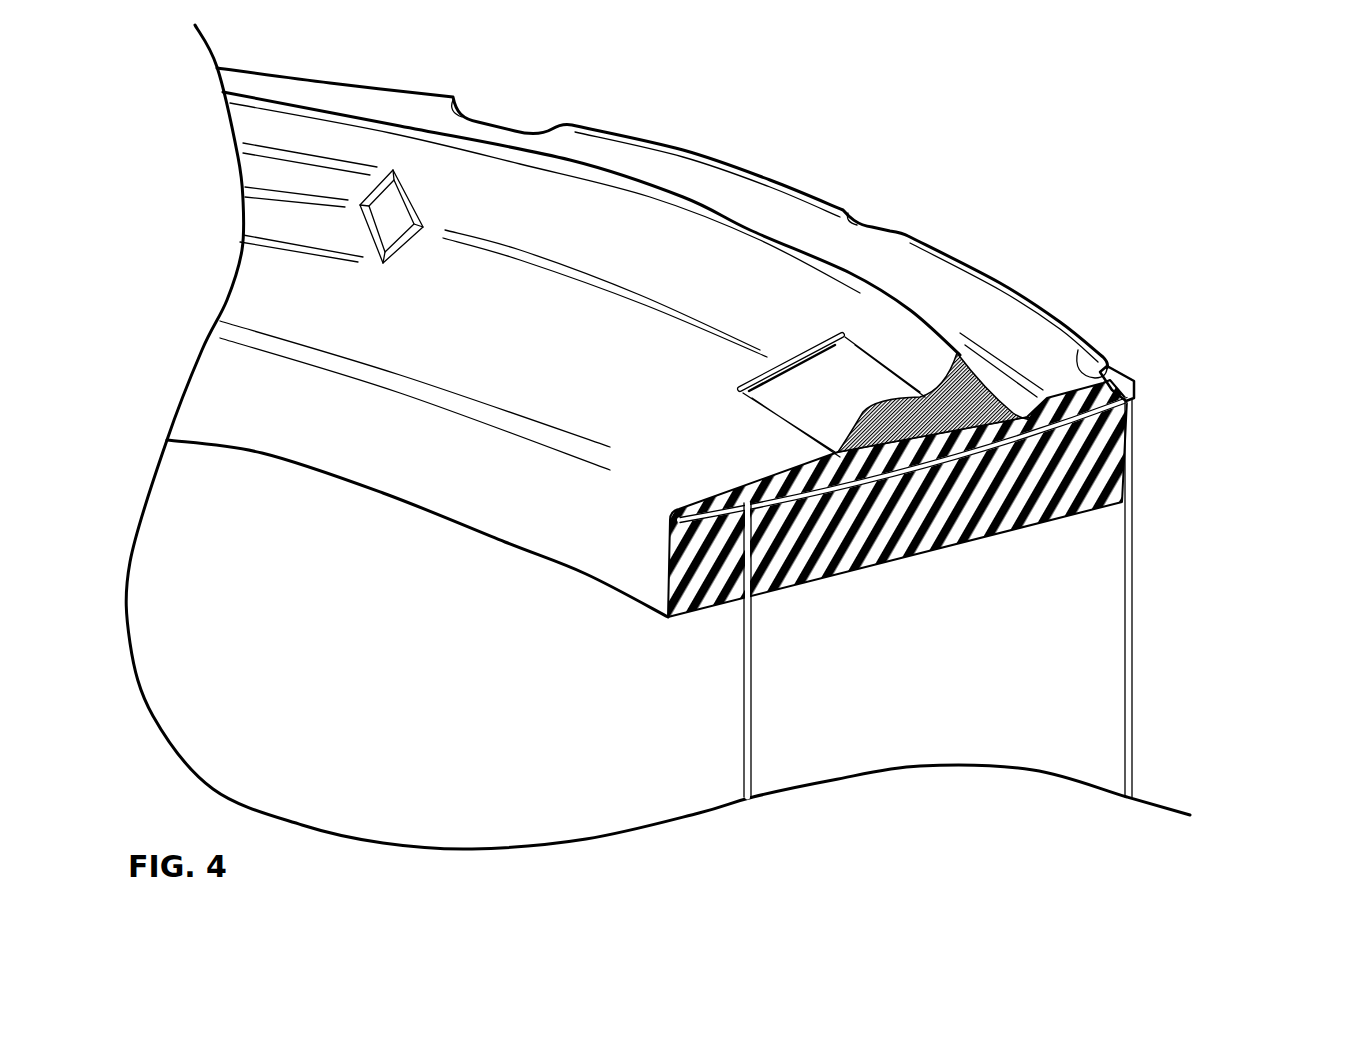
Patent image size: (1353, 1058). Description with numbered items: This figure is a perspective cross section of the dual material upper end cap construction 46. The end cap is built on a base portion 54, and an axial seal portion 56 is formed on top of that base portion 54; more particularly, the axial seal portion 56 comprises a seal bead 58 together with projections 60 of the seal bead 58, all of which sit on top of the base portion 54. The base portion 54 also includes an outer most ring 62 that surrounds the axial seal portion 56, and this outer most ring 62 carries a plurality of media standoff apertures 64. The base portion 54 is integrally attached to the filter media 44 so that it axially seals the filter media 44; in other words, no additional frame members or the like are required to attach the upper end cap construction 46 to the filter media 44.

The filter media 44 is at (1132, 643).
The upper end cap construction 46 is at (1235, 402).
The base portion 54 is at (1133, 442).
The axial seal portion 56 is at (650, 238).
The seal bead 58 is at (987, 373).
The projections 60 is at (780, 385).
The outer most ring 62 is at (1057, 358).
The media standoff apertures 64 is at (1110, 350).